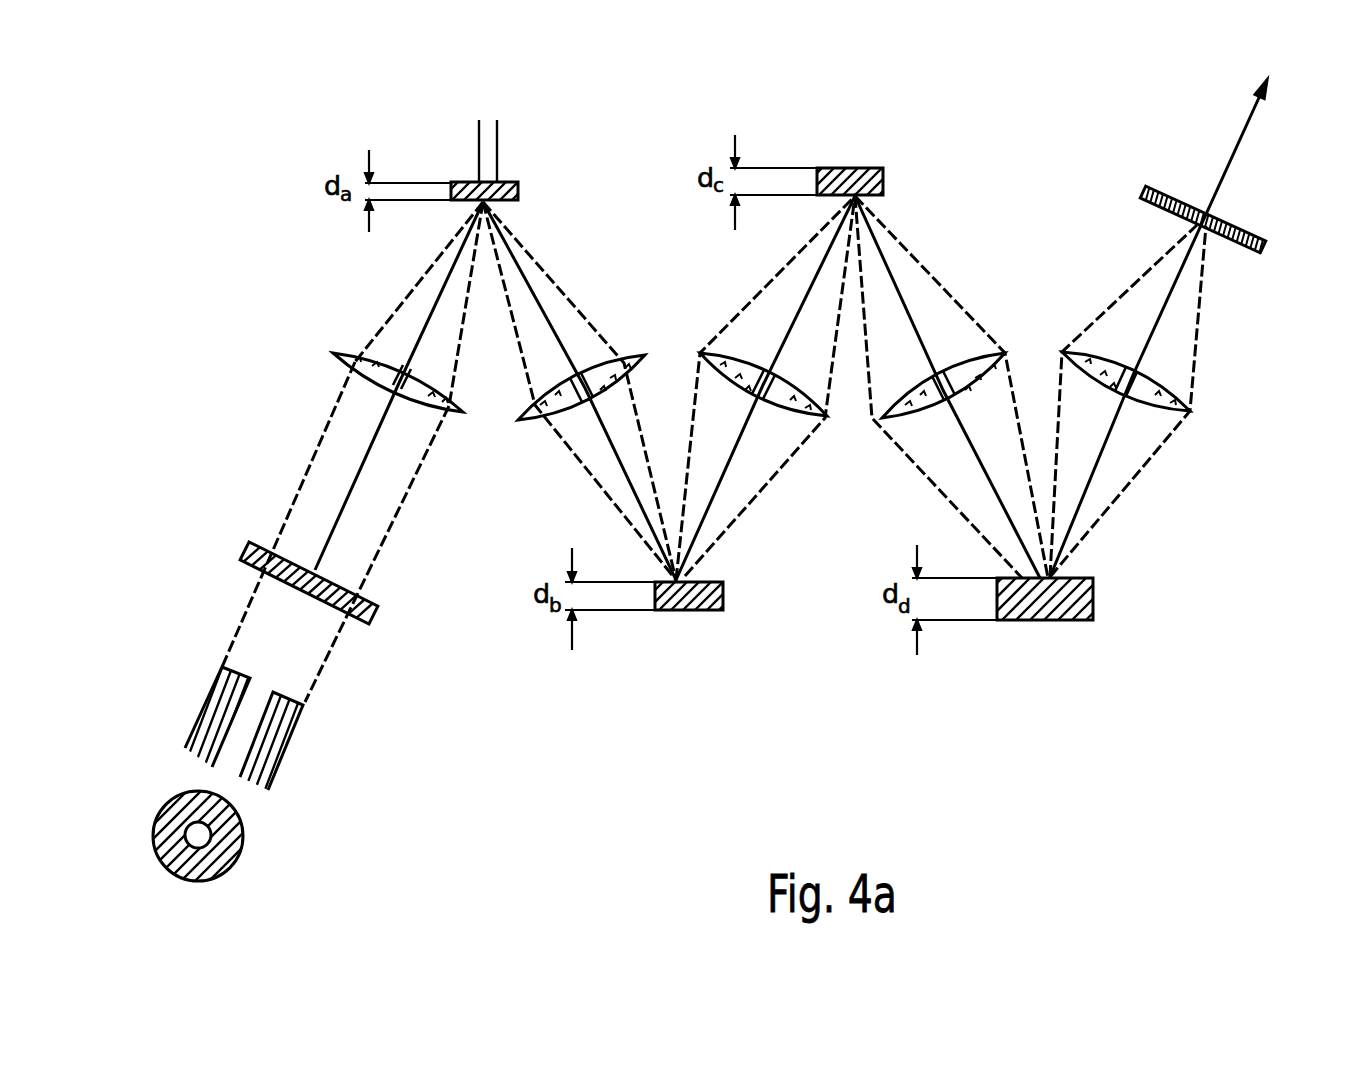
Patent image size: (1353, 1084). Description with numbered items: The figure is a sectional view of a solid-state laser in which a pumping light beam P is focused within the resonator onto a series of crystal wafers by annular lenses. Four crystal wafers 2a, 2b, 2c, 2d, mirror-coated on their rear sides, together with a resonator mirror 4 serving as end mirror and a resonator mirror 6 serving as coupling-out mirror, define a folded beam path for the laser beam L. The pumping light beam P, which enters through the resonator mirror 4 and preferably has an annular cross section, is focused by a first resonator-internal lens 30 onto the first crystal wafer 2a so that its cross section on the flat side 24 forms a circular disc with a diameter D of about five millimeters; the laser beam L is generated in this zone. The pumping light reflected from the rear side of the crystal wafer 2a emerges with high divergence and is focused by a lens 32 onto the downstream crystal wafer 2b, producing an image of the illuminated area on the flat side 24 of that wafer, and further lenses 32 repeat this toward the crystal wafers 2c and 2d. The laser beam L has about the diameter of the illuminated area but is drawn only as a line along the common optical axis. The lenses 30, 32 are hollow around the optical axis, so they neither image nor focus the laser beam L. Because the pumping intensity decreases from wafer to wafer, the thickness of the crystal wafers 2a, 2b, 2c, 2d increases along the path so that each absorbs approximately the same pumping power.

The first crystal wafer 2a is at (518, 184).
The crystal wafer 2b is at (710, 604).
The crystal wafer 2c is at (880, 183).
The crystal wafer 2d is at (1085, 598).
The flat side 24 is at (508, 201).
The first resonator-internal lens 30 is at (358, 351).
The lens 32 is at (535, 423).
The resonator mirror 4 is at (250, 550).
The resonator mirror 6 is at (1250, 228).
The laser beam L is at (345, 503).
The pumping light beam P is at (380, 547).
The diameter D is at (530, 129).